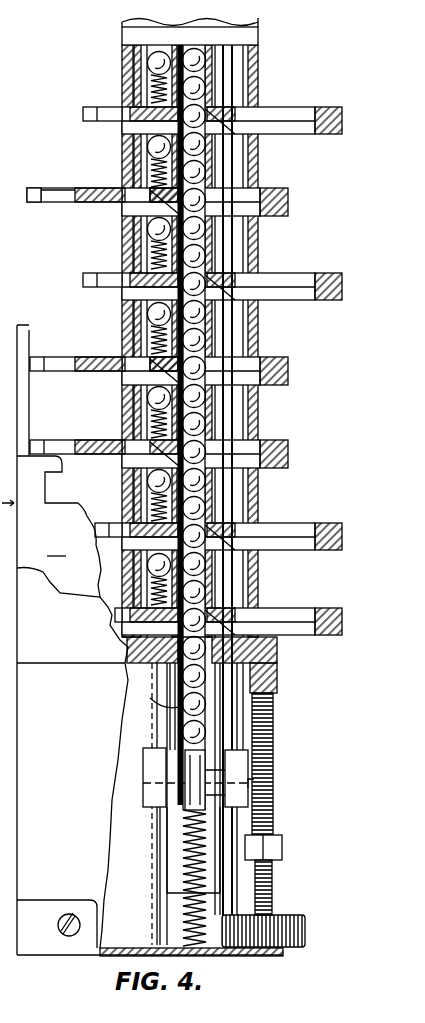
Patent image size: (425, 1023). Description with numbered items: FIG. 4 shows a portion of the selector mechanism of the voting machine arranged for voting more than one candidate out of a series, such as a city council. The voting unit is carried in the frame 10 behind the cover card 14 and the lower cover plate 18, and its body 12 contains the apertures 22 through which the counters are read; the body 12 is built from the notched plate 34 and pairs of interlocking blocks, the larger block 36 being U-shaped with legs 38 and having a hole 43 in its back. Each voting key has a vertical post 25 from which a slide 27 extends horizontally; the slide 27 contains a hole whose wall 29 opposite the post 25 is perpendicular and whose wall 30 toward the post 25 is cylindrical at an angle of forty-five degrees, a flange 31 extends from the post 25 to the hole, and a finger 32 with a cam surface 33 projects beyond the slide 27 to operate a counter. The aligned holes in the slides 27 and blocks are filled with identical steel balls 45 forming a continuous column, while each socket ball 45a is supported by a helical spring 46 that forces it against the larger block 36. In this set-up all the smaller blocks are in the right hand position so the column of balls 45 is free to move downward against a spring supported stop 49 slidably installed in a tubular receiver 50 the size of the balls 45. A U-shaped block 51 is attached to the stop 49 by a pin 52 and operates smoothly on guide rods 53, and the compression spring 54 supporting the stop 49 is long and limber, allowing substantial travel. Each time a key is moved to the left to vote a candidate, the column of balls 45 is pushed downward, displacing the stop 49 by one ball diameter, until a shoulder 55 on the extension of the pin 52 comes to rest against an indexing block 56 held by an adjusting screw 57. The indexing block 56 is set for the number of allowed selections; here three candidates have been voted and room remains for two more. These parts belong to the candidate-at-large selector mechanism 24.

The frame 10 is at (215, 956).
The body 12 is at (242, 402).
The cover card 14 is at (62, 635).
The lower cover plate 18 is at (72, 743).
The aperture 22 is at (66, 556).
The candidate-at-large selector mechanism index 24 is at (290, 823).
The vertical post 25 is at (343, 124).
The slide 27 is at (296, 101).
The wall of hole 29 is at (128, 210).
The wall of hole 30 is at (175, 198).
The flange 31 is at (272, 136).
The finger 32 is at (70, 187).
The cam surface 33 is at (33, 187).
The notched plate 34 is at (60, 538).
The larger block 36 is at (163, 34).
The legs 38 is at (124, 86).
The hole 43 is at (196, 21).
The steel balls 45 is at (210, 86).
The ball 45a is at (150, 58).
The helical spring 46 is at (140, 176).
The spring supported stop 49 is at (206, 769).
The tubular receiver 50 is at (155, 698).
The U-shaped block 51 is at (152, 768).
The pin 52 is at (173, 795).
The guide rods 53 is at (238, 718).
The compression spring 54 is at (192, 940).
The shoulder 55 is at (254, 782).
The indexing block 56 is at (283, 850).
The adjusting screw 57 is at (272, 905).